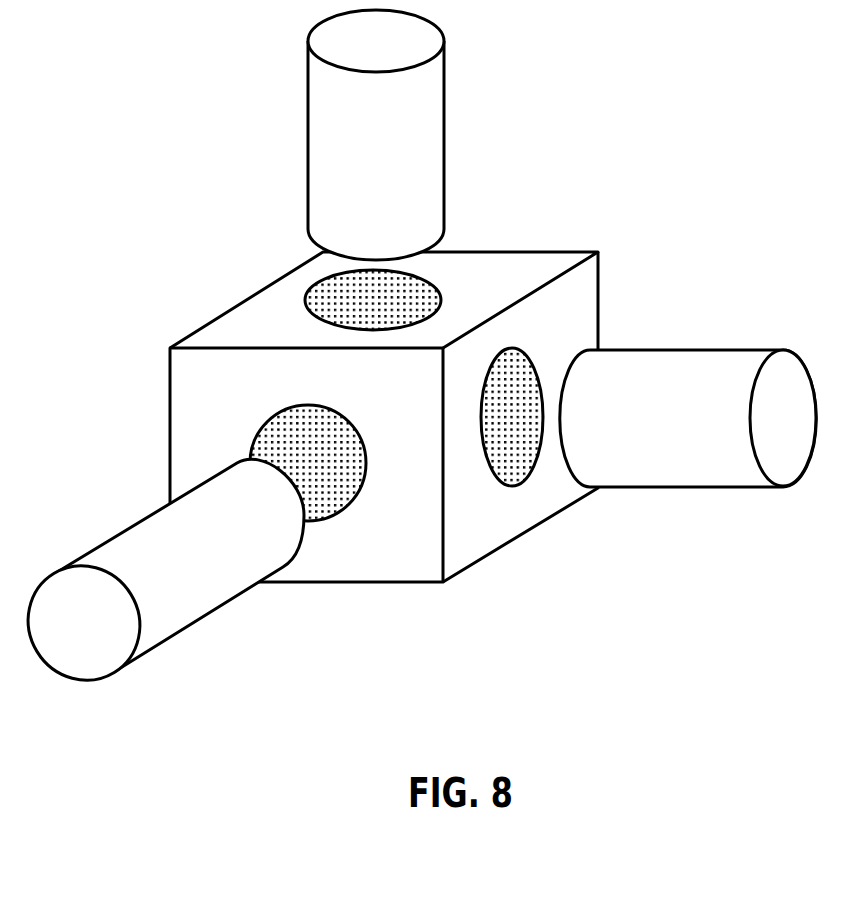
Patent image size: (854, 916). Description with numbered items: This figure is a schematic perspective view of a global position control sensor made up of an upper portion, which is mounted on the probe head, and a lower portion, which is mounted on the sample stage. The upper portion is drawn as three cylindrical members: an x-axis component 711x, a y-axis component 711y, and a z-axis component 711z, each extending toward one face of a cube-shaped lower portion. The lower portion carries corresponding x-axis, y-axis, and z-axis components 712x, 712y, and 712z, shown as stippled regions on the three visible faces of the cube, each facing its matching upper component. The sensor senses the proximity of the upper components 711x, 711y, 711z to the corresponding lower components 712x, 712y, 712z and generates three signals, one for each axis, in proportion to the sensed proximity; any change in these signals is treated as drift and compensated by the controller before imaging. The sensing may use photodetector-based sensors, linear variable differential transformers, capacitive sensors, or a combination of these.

The x-axis component 711x is at (688, 418).
The y-axis component 711y is at (155, 580).
The z-axis component 711z is at (376, 135).
The x-axis component 712x is at (513, 480).
The y-axis component 712y is at (281, 414).
The z-axis component 712z is at (438, 285).